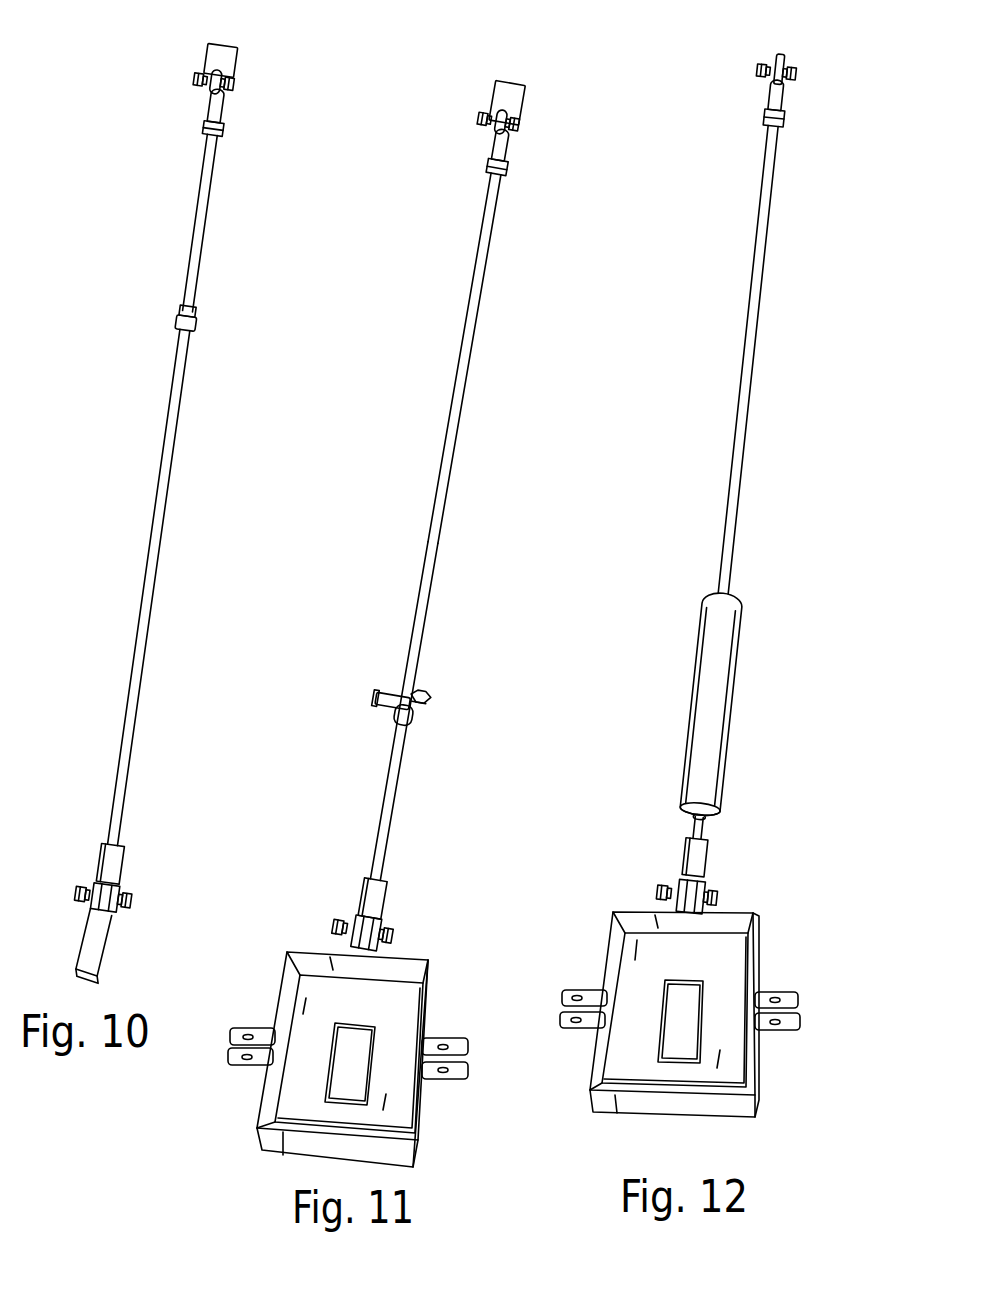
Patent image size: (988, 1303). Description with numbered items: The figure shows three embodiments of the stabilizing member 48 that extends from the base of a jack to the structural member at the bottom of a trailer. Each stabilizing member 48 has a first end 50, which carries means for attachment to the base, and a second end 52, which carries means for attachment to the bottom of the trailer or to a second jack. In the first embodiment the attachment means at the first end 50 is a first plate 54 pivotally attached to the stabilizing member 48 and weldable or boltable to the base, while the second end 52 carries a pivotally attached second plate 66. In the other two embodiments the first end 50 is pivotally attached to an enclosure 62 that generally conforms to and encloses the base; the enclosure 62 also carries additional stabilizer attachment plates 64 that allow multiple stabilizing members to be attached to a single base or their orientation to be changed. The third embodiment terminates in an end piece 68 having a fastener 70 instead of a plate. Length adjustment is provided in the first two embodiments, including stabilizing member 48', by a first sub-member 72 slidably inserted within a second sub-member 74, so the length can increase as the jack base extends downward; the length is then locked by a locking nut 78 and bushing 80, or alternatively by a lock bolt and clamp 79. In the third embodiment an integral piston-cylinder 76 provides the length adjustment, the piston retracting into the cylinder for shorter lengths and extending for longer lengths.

In FIG. 10, the stabilizing member 48 is at (190, 509).
In FIG. 11, the stabilizing member 48' is at (467, 516).
In FIG. 10, the first end 50 is at (125, 855).
In FIG. 11, the first end 50 is at (383, 893).
In FIG. 12, the first end 50 is at (705, 863).
In FIG. 10, the second end 52 is at (222, 131).
In FIG. 11, the second end 52 is at (507, 168).
In FIG. 12, the second end 52 is at (786, 127).
In FIG. 10, the first plate 54 is at (118, 945).
In FIG. 11, the enclosure 62 is at (430, 967).
In FIG. 12, the enclosure 62 is at (760, 955).
In FIG. 11, the stabilizer attachment plates 64 is at (467, 1080).
In FIG. 12, the stabilizer attachment plates 64 is at (802, 1032).
In FIG. 10, the second plate 66 is at (233, 55).
In FIG. 11, the second plate 66 is at (523, 100).
In FIG. 12, the end piece 68 is at (778, 55).
In FIG. 12, the fastener 70 is at (796, 75).
In FIG. 10, the first sub-member 72 is at (176, 422).
In FIG. 11, the first sub-member 72 is at (446, 518).
In FIG. 10, the second sub-member 74 is at (196, 240).
In FIG. 11, the second sub-member 74 is at (465, 275).
In FIG. 12, the piston-cylinder 76 is at (782, 747).
In FIG. 10, the locking nut 78 is at (194, 325).
In FIG. 11, the lock bolt and clamp 79 is at (415, 715).
In FIG. 10, the bushing 80 is at (197, 313).